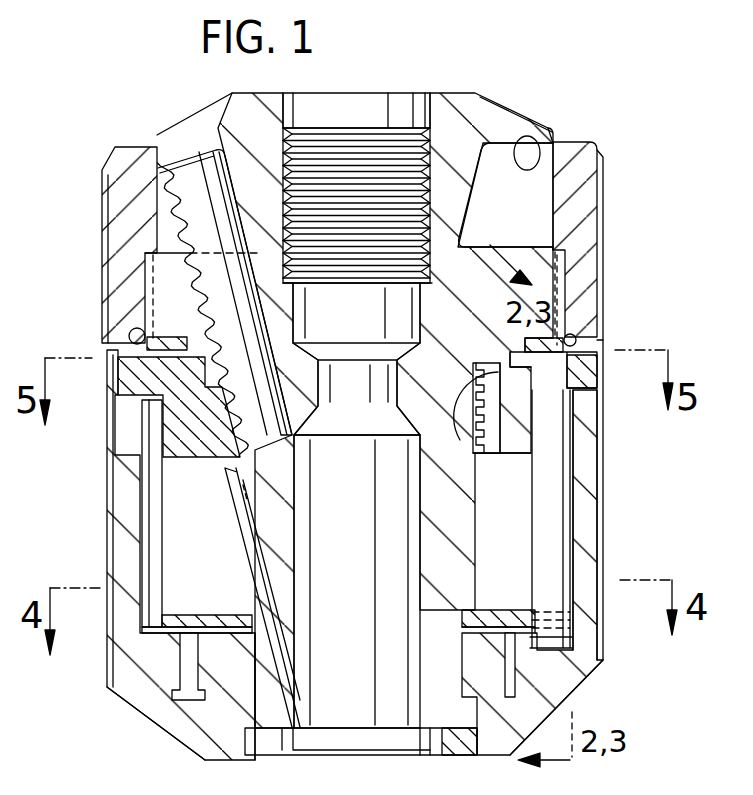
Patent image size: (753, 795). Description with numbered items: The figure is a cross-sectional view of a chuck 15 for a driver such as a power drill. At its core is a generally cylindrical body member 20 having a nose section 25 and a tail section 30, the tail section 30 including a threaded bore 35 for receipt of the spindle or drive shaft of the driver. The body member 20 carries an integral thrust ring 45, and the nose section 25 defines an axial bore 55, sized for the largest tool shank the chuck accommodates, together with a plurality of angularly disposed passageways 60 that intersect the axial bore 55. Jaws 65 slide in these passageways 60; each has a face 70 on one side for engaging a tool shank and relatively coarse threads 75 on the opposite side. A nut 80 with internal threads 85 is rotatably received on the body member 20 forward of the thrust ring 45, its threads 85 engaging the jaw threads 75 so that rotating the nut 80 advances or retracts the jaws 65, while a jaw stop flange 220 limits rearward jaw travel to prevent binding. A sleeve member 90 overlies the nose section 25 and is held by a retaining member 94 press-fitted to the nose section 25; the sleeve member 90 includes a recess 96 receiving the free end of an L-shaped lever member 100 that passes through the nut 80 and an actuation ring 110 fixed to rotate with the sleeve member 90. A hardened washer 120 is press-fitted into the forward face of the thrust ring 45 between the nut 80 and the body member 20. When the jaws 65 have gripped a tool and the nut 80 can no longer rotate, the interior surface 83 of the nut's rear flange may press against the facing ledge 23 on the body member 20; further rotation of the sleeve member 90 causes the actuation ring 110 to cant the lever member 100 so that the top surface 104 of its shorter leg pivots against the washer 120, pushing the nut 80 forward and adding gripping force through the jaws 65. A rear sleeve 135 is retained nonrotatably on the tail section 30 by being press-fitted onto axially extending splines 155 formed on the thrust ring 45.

The chuck 15 is at (553, 61).
The body member 20 is at (445, 518).
The facing ledge 23 is at (605, 360).
The nose section 25 is at (423, 727).
The tail section 30 is at (487, 112).
The threaded bore 35 is at (400, 157).
The thrust ring 45 is at (150, 330).
The axial bore 55 is at (363, 705).
The angularly disposed passageways 60 is at (280, 655).
The jaws 65 is at (185, 190).
The face 70 is at (305, 545).
The threads 75 is at (170, 215).
The nut 80 is at (190, 440).
The interior surface 83 is at (530, 407).
The internal threads 85 is at (458, 430).
The sleeve member 90 is at (588, 523).
The retaining member 94 is at (197, 722).
The recess 96 is at (555, 650).
The lever member 100 is at (547, 553).
The top surface 104 is at (475, 761).
The actuation ring 110 is at (178, 612).
The washer 120 is at (137, 344).
The rear sleeve 135 is at (585, 205).
The splines 155 is at (100, 243).
The jaw stop flange 220 is at (190, 165).